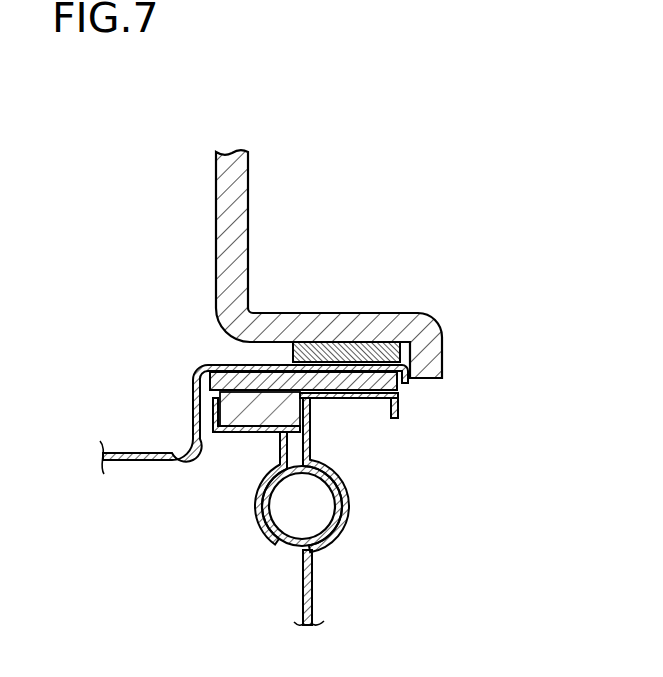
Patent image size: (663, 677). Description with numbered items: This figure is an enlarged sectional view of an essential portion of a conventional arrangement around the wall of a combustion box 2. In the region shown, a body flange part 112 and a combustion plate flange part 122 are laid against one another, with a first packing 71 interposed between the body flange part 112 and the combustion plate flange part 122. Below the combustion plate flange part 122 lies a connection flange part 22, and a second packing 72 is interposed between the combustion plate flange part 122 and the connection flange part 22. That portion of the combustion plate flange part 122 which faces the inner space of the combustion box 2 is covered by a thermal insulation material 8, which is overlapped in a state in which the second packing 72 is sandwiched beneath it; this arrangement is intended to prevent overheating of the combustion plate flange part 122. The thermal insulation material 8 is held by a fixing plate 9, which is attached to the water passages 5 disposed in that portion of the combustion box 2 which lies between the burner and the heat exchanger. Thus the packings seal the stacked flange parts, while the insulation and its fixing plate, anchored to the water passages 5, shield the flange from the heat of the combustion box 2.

The combustion box 2 is at (312, 605).
The water passages 5 is at (282, 538).
The first packing 71 is at (375, 342).
The second packing 72 is at (272, 368).
The thermal insulation material 8 is at (233, 412).
The fixing plate 9 is at (275, 435).
The connection flange part 22 is at (345, 399).
The body flange part 112 is at (318, 313).
The combustion plate flange part 122 is at (363, 399).